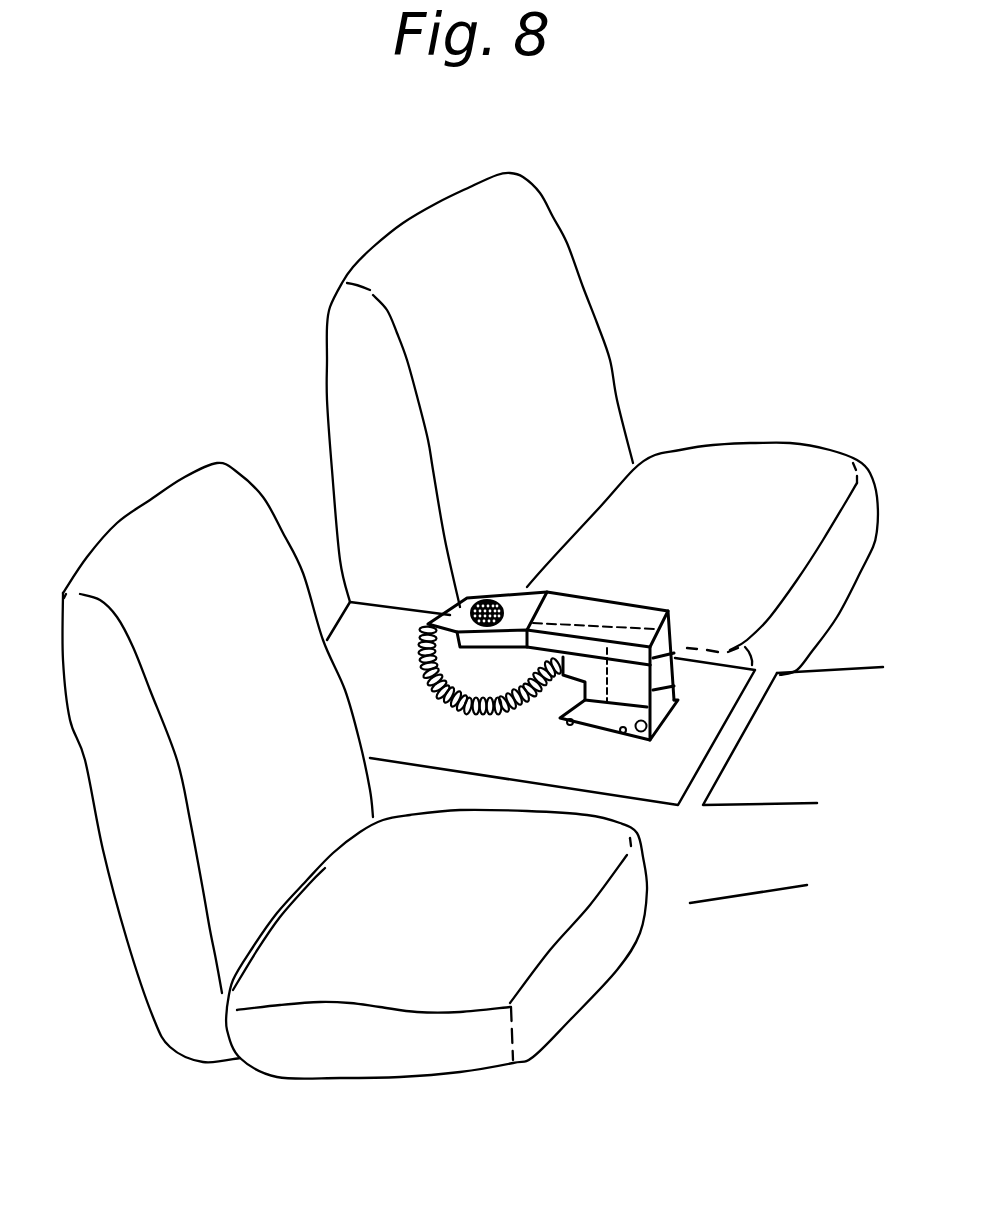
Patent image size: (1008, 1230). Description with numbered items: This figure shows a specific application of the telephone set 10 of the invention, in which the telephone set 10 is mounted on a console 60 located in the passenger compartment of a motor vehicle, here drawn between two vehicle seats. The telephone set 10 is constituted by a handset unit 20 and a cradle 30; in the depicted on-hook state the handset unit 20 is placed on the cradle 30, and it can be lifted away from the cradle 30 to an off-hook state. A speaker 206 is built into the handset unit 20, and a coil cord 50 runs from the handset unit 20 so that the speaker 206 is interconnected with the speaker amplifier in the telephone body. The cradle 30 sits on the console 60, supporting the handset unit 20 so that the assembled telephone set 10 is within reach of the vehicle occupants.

The telephone set 10 is at (682, 580).
The handset unit 20 is at (610, 597).
The cradle 30 is at (612, 682).
The coil cord 50 is at (437, 700).
The console 60 is at (685, 748).
The speaker 206 is at (485, 600).